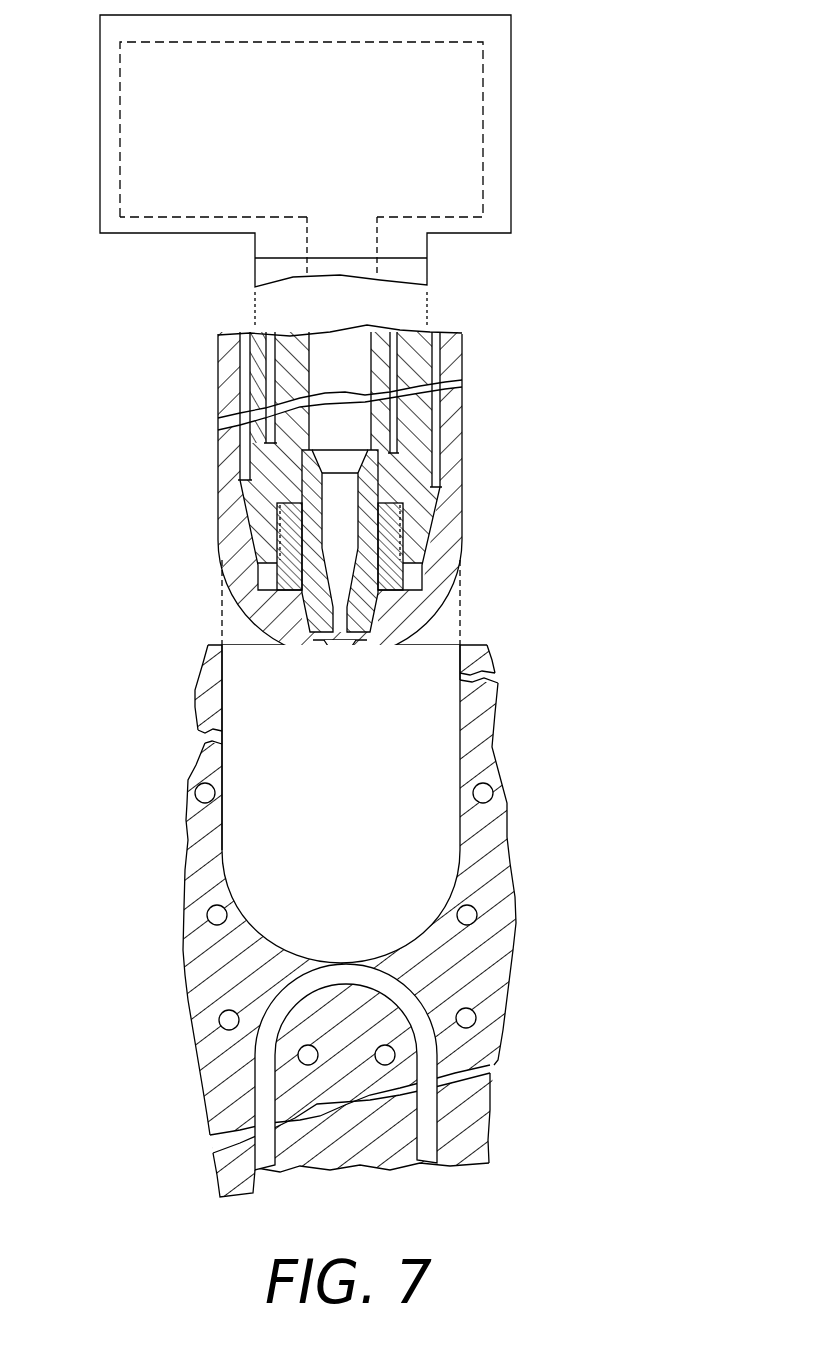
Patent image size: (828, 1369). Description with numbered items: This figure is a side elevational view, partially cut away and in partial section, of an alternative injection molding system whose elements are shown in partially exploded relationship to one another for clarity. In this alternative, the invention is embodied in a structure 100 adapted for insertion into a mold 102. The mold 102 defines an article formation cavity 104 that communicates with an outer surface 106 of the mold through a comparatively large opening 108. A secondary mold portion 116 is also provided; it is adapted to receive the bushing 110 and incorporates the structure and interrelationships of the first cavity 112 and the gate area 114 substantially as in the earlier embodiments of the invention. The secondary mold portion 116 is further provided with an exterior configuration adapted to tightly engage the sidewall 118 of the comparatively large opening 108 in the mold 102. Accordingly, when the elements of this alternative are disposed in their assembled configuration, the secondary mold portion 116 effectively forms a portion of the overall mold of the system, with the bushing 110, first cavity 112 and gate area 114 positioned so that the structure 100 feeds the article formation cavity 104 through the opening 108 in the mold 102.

The structure 100 is at (416, 511).
The mold 102 is at (434, 897).
The article formation cavity 104 is at (430, 1050).
The outer surface 106 is at (472, 643).
The comparatively large opening 108 is at (373, 838).
The bushing 110 is at (417, 417).
The first cavity 112 is at (440, 470).
The gate area 114 is at (342, 662).
The secondary mold portion 116 is at (230, 545).
The sidewall 118 is at (222, 768).